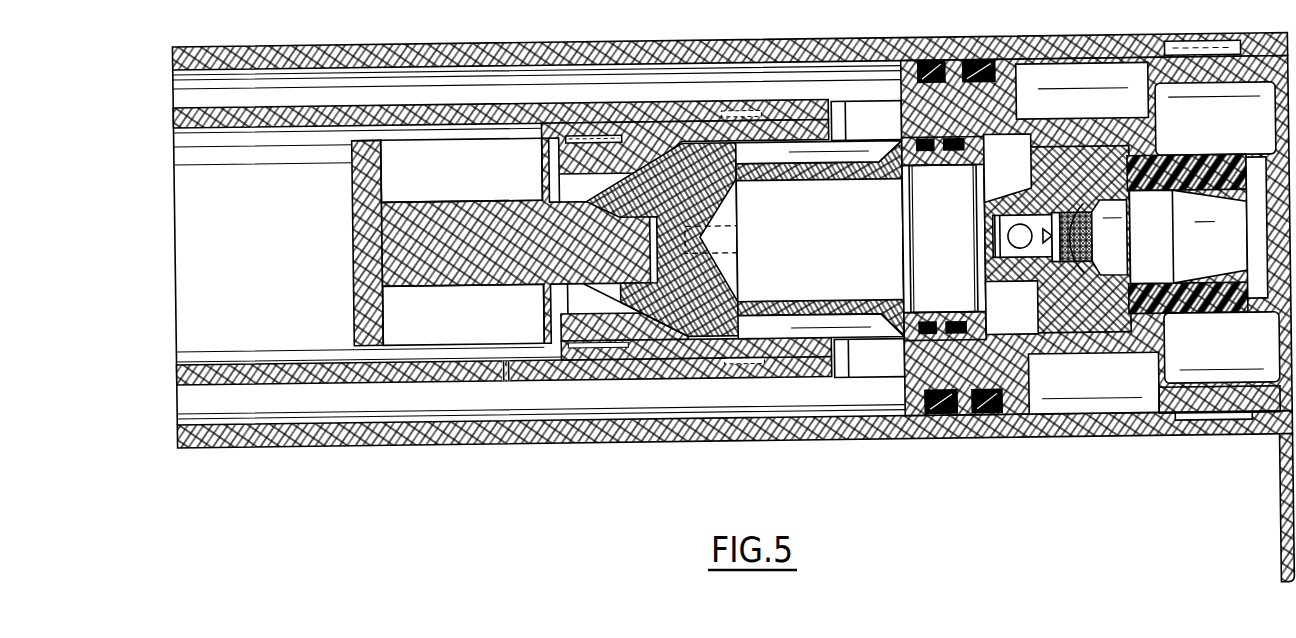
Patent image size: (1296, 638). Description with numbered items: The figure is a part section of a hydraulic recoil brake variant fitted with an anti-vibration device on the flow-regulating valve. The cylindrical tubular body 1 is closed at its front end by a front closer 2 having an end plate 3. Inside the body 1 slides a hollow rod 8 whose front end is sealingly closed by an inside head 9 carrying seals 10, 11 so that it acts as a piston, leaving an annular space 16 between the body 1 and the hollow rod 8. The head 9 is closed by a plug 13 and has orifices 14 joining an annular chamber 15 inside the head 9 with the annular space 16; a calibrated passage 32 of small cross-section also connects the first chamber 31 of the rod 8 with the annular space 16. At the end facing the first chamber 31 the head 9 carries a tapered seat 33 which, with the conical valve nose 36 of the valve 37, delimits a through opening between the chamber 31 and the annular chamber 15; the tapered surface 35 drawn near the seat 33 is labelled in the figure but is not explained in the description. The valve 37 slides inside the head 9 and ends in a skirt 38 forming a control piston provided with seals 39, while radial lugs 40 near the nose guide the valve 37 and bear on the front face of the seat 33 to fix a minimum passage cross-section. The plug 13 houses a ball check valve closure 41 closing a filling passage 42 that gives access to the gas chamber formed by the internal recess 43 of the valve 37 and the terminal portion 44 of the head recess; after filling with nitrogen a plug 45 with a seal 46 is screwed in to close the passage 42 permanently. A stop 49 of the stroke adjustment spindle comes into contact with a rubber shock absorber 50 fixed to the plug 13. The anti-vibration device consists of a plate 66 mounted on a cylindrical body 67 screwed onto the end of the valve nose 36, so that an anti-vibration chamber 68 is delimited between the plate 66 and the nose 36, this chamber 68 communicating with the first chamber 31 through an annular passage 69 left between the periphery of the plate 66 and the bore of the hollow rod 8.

The cylindrical tubular body 1 is at (1073, 437).
The front closer 2 is at (1210, 408).
The end plate 3 is at (1275, 339).
The hollow rod 8 is at (332, 375).
The inside head 9 is at (903, 389).
The seal 10 is at (940, 423).
The seal 11 is at (990, 423).
The plug 13 is at (1103, 312).
The orifices 14 is at (868, 240).
The annular chamber 15 is at (812, 338).
The annular space 16 is at (683, 407).
The first chamber 31 is at (359, 256).
The calibrated passage 32 is at (505, 387).
The seat 33 is at (565, 342).
The inclined surface 35 is at (686, 231).
The valve nose 36 is at (671, 200).
The valve 37 is at (893, 176).
The skirt 38 is at (955, 328).
The seals 39 is at (950, 150).
The radial lugs 40 is at (737, 189).
The ball check valve closure 41 is at (1000, 243).
The filling passage 42 is at (1040, 266).
The internal recess 43 is at (820, 240).
The terminal portion of the recess 44 is at (1007, 168).
The plug 45 is at (1092, 247).
The seal 46 is at (1135, 205).
The stop 49 is at (1258, 189).
The shock absorber 50 is at (1185, 198).
The plate 66 is at (366, 182).
The cylindrical body 67 is at (498, 244).
The anti-vibration chamber 68 is at (462, 170).
The annular passage 69 is at (366, 143).